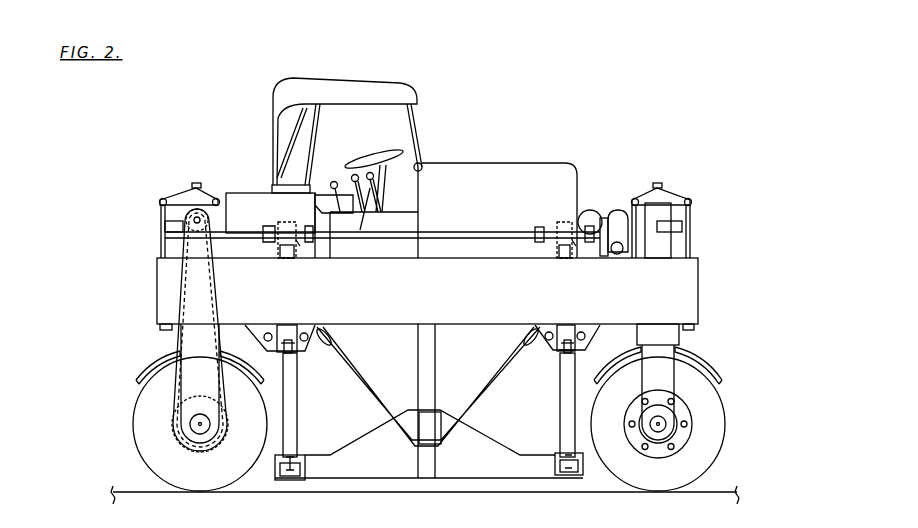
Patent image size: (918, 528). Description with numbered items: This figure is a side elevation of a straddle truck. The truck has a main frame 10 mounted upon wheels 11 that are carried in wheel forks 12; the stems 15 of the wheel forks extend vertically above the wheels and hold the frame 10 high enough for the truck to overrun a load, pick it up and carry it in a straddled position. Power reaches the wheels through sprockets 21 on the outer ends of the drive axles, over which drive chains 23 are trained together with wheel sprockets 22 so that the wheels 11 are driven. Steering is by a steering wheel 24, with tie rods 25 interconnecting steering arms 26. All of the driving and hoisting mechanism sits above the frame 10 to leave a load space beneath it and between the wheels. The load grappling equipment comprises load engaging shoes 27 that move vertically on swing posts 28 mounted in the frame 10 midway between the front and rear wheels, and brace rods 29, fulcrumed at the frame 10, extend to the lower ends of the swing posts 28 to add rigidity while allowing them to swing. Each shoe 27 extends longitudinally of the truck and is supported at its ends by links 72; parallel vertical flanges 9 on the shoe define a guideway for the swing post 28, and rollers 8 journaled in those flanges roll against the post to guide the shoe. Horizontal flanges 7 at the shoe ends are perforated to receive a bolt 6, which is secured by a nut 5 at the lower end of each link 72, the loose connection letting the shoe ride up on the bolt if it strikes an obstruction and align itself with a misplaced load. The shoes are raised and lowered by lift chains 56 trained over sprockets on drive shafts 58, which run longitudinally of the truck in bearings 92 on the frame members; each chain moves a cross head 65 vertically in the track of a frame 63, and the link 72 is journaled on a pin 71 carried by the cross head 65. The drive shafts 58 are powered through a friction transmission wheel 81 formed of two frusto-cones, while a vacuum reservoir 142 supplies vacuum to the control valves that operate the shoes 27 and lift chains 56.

The nut 5 is at (278, 470).
The bolt 6 is at (287, 477).
The horizontal flange 7 is at (300, 473).
The roller 8 is at (435, 413).
The vertical flange 9 is at (417, 459).
The main frame 10 is at (700, 258).
The wheel 11 is at (134, 425).
The wheel fork 12 is at (190, 390).
The stem 15 is at (160, 330).
The sprocket 21 is at (195, 228).
The wheel sprocket 22 is at (178, 432).
The drive chain 23 is at (172, 291).
The steering wheel 24 is at (403, 152).
The tie rod 25 is at (163, 216).
The steering arm 26 is at (185, 237).
The load engaging shoe 27 is at (365, 478).
The swing post 28 is at (416, 352).
The brace rod 29 is at (368, 393).
The lift chain 56 is at (284, 260).
The drive shaft 58 is at (543, 228).
The frame 63 is at (290, 330).
The cross head 65 is at (556, 351).
The pin 71 is at (292, 360).
The link 72 is at (298, 418).
The friction transmission wheel 81 is at (612, 212).
The bearing 92 is at (300, 247).
The vacuum reservoir 142 is at (248, 200).